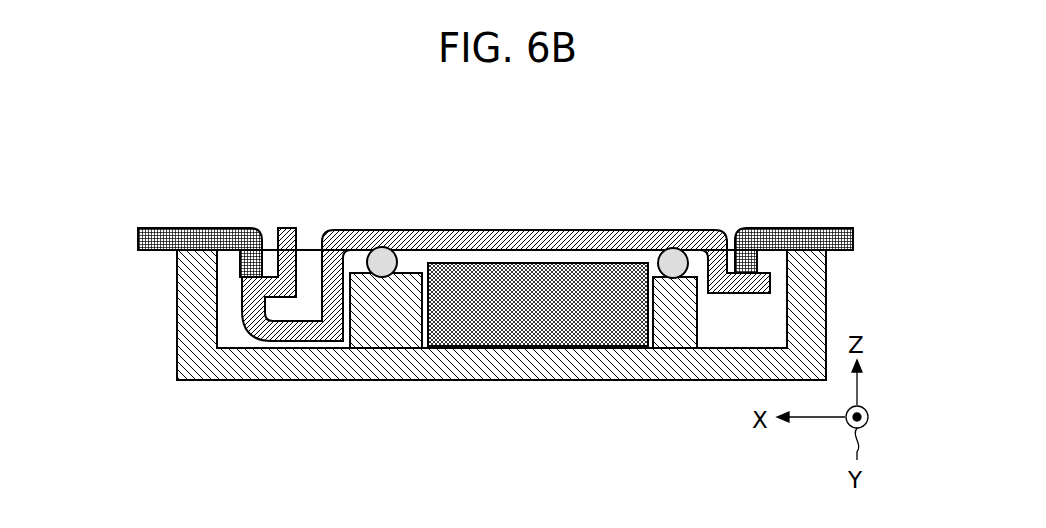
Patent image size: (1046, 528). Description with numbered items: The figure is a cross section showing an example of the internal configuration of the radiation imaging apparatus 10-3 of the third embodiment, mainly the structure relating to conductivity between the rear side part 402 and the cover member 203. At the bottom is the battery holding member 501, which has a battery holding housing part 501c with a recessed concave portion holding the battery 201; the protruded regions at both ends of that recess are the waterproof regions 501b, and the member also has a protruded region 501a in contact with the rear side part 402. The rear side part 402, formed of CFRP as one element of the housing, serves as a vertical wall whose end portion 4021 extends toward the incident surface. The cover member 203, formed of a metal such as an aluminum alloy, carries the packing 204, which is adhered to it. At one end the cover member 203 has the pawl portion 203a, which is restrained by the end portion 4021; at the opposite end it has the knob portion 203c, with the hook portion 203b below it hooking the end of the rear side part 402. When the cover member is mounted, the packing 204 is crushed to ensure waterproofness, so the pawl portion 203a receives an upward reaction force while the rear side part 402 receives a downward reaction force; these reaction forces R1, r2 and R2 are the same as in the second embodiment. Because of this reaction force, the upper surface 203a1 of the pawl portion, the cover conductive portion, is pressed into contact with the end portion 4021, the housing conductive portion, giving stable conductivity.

The radiation imaging apparatus 10-3 is at (575, 138).
The battery 201 is at (615, 320).
The cover member 203 is at (510, 240).
The pawl portion 203a is at (770, 284).
The upper surface of the pawl portion 203a1 is at (763, 276).
The hook portion 203b is at (240, 284).
The knob portion 203c is at (282, 227).
The packing 204 is at (380, 262).
The rear side part 402 is at (208, 238).
The end portion of the rear side part 4021 is at (747, 278).
The battery holding member 501 is at (232, 370).
The protruded region 501a is at (193, 265).
The waterproof regions 501b is at (396, 290).
The battery holding housing part 501c is at (479, 380).
The reaction force R1 is at (380, 228).
The reaction force R2 is at (747, 231).
The reaction force r2 is at (250, 231).